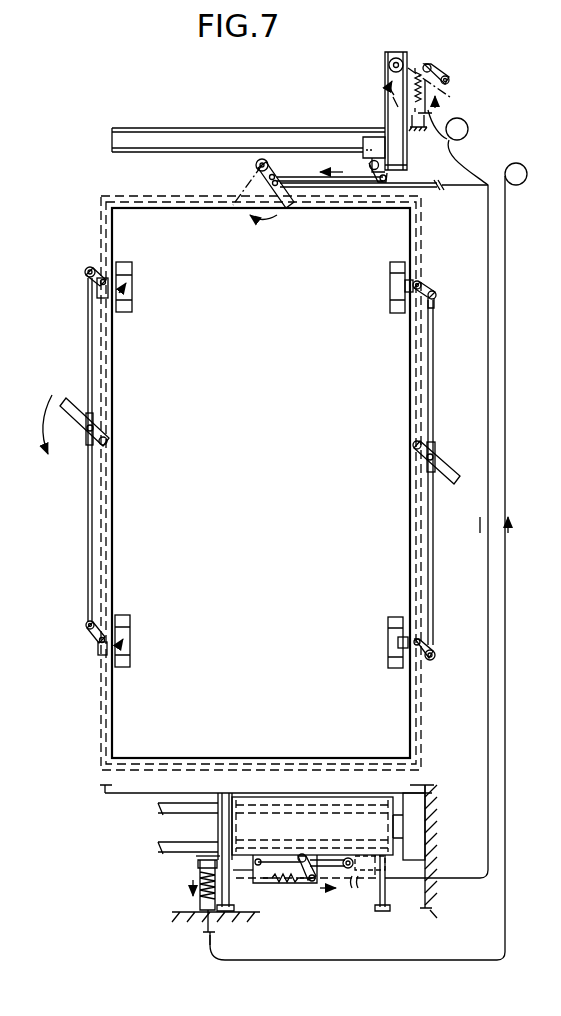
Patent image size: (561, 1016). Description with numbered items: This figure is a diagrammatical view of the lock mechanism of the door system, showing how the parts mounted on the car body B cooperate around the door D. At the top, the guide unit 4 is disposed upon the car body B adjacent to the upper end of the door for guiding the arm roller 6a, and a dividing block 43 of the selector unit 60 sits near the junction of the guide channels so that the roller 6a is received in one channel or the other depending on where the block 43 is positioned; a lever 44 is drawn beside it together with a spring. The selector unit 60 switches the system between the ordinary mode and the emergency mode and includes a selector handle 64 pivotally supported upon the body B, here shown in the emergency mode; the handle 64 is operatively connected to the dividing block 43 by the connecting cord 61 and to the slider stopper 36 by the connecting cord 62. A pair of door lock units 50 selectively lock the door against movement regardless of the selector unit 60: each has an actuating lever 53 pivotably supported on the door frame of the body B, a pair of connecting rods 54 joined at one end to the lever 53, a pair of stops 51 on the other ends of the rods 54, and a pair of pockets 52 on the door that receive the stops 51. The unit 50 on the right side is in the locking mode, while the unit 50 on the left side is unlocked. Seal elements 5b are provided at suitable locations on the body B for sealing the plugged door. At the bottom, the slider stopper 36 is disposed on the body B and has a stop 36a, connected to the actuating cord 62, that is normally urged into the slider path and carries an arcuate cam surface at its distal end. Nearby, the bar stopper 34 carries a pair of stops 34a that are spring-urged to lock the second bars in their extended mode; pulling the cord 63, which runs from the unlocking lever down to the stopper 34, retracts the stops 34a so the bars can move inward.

The guide unit 4 is at (291, 117).
The seal elements 5b is at (107, 720).
The arm roller 6a is at (395, 56).
The bar stopper 34 is at (317, 898).
The stops 34a is at (233, 870).
The slider stopper 36 is at (178, 893).
The stop 36a is at (198, 858).
The dividing block 43 is at (373, 138).
The lever 44 is at (431, 70).
The door lock units 50 is at (396, 465).
The stops 51 is at (102, 290).
The pockets 52 is at (133, 268).
The actuating lever 53 is at (66, 402).
The connecting rods 54 is at (87, 513).
The selector unit 60 is at (231, 218).
The connecting cord 61 is at (340, 181).
The connecting cord 62 is at (392, 190).
The cord 63 is at (460, 166).
The selector handle 64 is at (282, 212).
The door D is at (259, 579).
The car body B is at (450, 846).